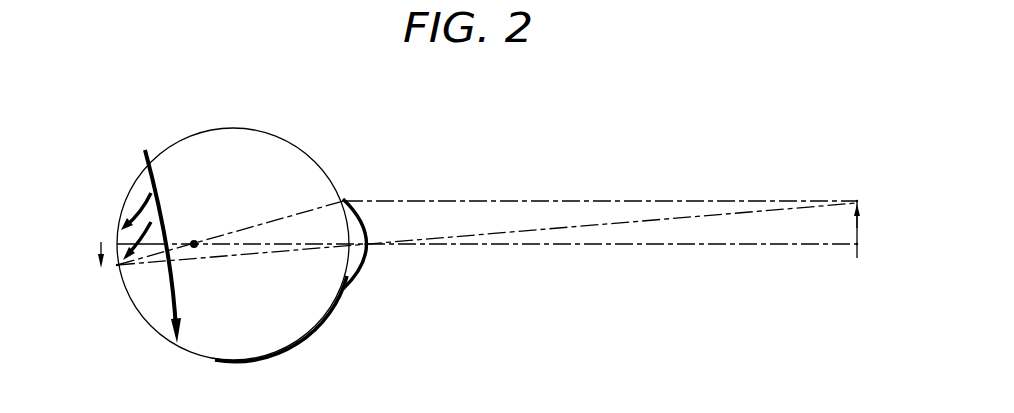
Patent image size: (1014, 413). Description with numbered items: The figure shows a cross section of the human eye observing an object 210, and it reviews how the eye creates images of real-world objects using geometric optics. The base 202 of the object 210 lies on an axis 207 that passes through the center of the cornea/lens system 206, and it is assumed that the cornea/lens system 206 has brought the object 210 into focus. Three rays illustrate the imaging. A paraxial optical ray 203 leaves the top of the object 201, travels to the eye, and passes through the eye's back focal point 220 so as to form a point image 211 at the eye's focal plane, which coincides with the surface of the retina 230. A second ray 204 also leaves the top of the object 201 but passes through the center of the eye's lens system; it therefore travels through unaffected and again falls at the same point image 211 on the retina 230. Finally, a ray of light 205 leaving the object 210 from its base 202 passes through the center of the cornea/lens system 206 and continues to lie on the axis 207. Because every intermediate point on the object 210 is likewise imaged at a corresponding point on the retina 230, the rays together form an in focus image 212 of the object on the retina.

The top of the object 201 is at (857, 198).
The base of the object 202 is at (857, 258).
The paraxial optical ray 203 is at (640, 200).
The ray 204 is at (722, 214).
The ray of light 205 is at (648, 246).
The cornea/lens system 206 is at (365, 223).
The axis 207 is at (117, 243).
The object 210 is at (858, 228).
The point image 211 is at (118, 264).
The in focus image 212 is at (86, 254).
The back focal point 220 is at (194, 241).
The retina 230 is at (151, 231).